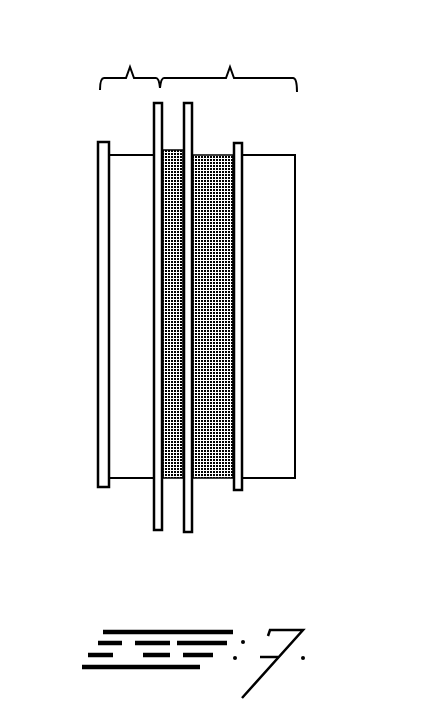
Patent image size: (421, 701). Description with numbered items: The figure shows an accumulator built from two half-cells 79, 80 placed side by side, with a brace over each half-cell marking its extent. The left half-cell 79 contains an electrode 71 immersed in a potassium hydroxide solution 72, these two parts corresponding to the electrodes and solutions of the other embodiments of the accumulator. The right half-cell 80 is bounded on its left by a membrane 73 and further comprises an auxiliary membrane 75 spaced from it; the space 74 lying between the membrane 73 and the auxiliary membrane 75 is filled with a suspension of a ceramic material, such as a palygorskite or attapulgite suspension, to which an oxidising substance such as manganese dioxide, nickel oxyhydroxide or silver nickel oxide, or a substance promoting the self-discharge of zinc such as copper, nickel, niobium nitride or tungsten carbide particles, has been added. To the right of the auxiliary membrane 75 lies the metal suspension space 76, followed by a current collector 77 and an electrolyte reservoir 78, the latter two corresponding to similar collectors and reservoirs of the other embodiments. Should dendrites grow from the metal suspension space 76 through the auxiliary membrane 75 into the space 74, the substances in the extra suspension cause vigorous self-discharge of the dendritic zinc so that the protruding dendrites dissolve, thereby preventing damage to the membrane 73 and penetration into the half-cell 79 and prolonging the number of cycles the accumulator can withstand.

The electrode 71 is at (69, 363).
The potassium hydroxide solution 72 is at (107, 370).
The membrane 73 is at (142, 367).
The space 74 is at (158, 344).
The auxiliary membrane 75 is at (198, 344).
The metal suspension space 76 is at (222, 370).
The current collector 77 is at (261, 364).
The electrolyte reservoir 78 is at (285, 370).
The half-cell 79 is at (130, 62).
The half-cell 80 is at (228, 63).